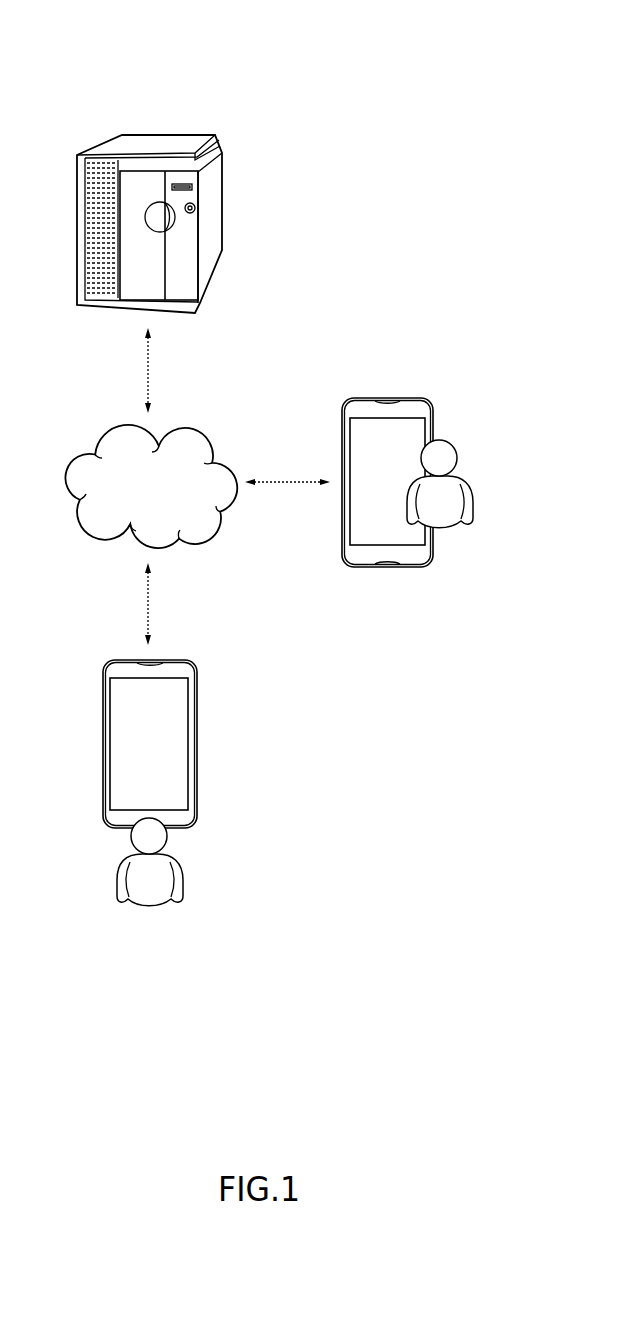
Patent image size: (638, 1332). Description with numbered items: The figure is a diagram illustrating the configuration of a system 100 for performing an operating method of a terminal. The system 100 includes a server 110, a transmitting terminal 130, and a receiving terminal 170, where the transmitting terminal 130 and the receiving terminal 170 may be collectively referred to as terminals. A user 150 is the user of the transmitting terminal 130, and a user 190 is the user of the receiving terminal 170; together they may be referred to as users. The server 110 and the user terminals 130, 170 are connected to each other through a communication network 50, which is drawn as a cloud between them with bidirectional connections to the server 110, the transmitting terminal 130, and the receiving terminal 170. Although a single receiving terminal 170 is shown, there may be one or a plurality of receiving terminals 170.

The system 100 is at (247, 67).
The server 110 is at (224, 198).
The communication network 50 is at (185, 423).
The transmitting terminal 130 is at (388, 397).
The user 150 is at (455, 442).
The receiving terminal 170 is at (198, 743).
The user 190 is at (185, 877).